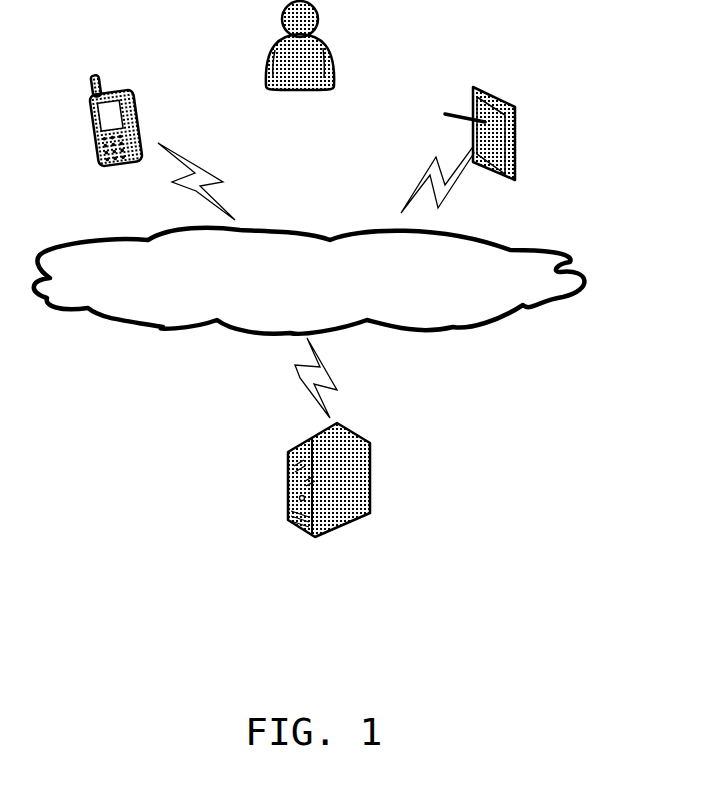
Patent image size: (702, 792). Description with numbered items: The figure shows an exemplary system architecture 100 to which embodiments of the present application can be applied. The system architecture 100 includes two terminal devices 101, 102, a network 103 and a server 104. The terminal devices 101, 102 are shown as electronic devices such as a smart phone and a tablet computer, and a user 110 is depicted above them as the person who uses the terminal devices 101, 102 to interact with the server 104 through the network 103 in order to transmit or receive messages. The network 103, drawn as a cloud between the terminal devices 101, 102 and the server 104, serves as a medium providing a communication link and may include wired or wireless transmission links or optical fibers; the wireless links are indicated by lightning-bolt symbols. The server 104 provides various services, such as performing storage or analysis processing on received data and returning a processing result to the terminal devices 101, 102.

The system architecture 100 is at (596, 28).
The terminal device 101 is at (115, 136).
The terminal device 102 is at (480, 152).
The network 103 is at (309, 281).
The server 104 is at (329, 497).
The user 110 is at (300, 62).